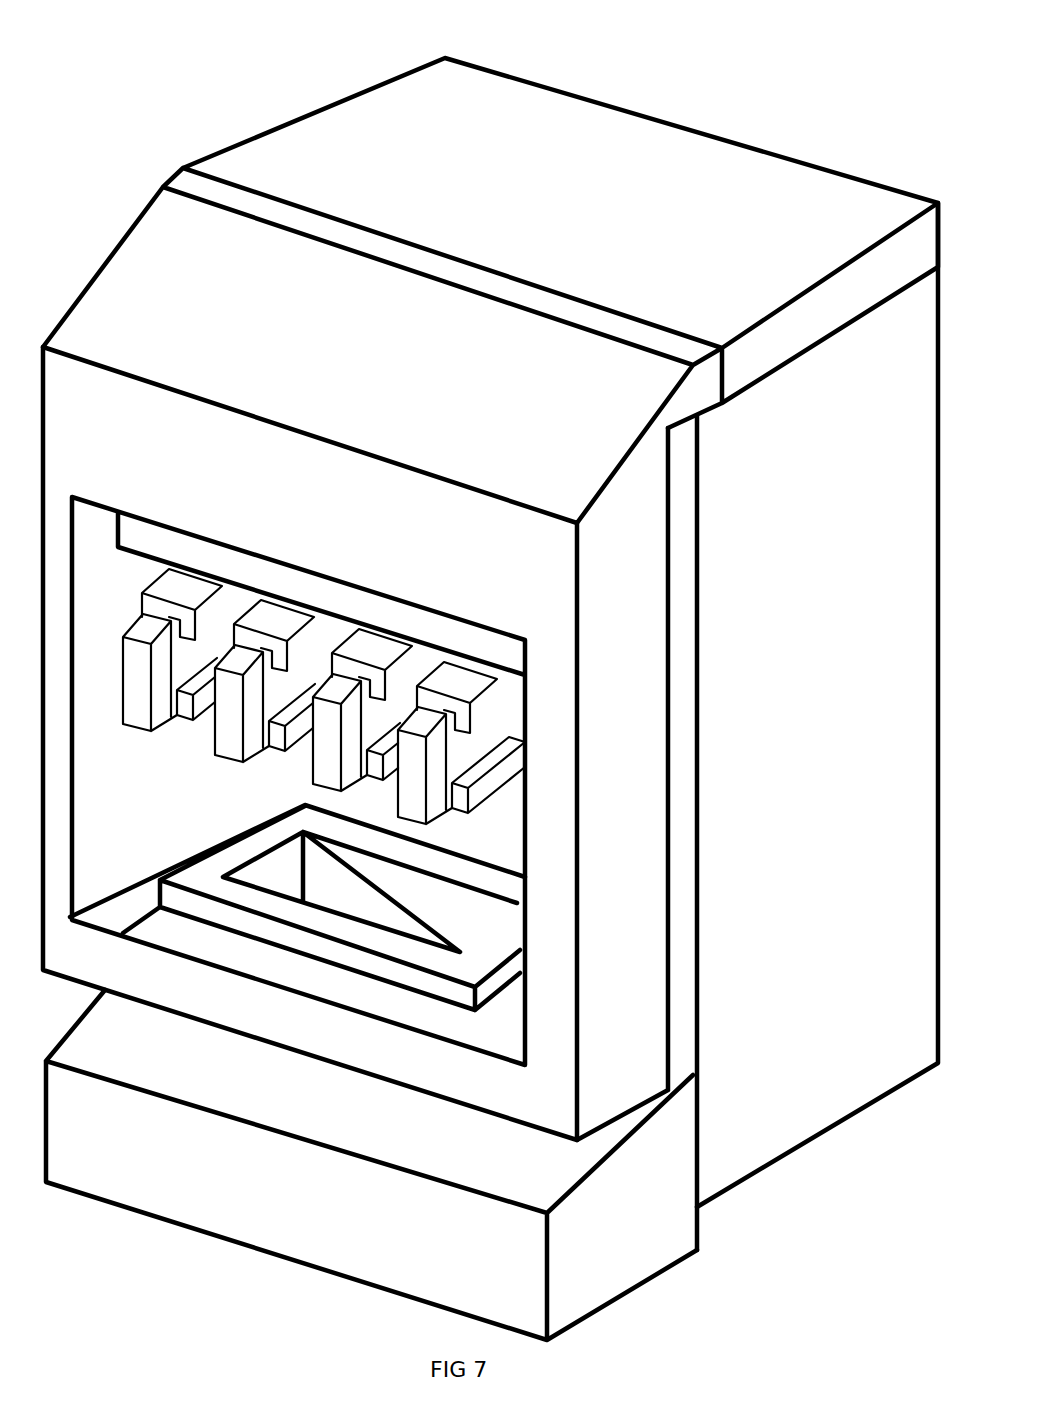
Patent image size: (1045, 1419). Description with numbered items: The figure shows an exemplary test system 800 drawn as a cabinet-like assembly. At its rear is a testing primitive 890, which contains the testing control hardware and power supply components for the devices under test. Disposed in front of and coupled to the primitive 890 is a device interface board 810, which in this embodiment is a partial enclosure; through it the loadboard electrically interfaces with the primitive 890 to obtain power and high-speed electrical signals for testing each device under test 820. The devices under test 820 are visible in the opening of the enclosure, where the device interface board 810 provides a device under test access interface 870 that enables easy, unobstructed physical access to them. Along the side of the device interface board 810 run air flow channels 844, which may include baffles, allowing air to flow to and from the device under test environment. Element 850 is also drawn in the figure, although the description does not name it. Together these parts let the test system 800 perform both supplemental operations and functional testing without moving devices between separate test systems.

The test system 800 is at (550, 28).
The device interface board 810 is at (629, 1014).
The device under test 820 is at (120, 690).
The air flow channels 844 is at (668, 755).
The rail 850 is at (198, 727).
The device under test access interface 870 is at (507, 846).
The testing primitive 890 is at (842, 700).